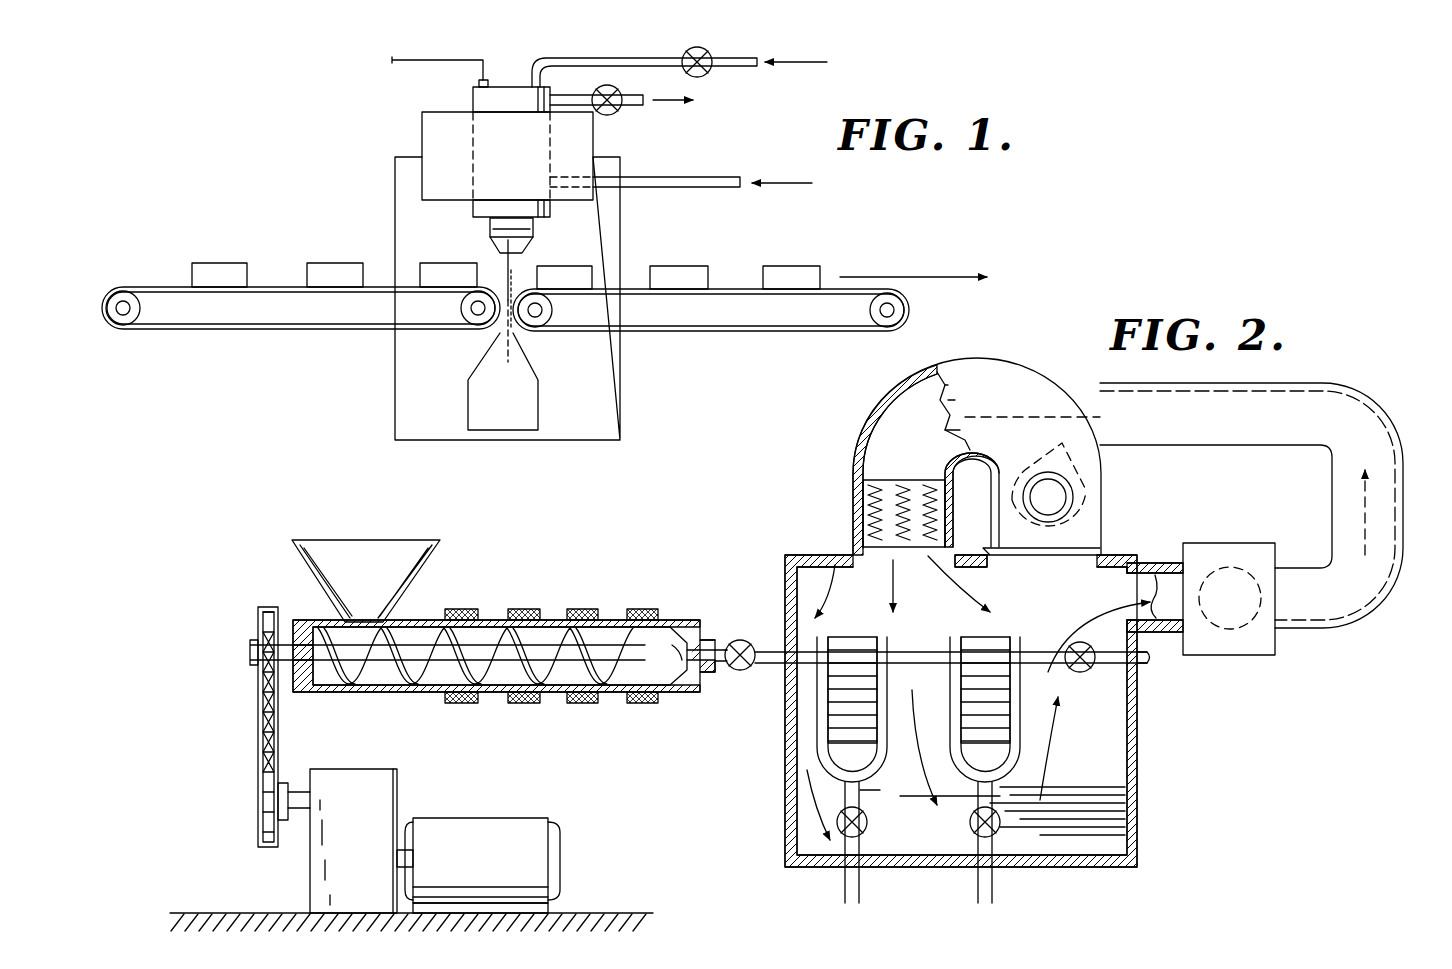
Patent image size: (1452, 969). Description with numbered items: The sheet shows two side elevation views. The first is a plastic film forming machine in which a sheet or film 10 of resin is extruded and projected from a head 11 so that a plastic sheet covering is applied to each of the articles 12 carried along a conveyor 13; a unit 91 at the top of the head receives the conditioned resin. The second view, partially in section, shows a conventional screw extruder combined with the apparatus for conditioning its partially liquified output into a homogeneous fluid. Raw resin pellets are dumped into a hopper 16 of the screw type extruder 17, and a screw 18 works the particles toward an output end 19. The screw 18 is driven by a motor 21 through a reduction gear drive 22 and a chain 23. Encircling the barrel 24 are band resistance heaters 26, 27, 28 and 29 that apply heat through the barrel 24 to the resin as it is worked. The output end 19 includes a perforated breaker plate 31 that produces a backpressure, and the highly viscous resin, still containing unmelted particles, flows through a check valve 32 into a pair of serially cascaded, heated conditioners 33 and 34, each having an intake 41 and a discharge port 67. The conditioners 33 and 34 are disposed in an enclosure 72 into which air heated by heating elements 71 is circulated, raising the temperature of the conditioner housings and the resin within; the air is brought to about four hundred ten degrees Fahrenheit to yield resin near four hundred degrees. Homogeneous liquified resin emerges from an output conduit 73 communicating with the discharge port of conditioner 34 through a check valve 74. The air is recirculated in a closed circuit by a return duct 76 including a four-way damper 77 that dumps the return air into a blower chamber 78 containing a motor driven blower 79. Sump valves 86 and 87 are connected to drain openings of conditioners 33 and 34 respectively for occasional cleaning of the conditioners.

In FIG. 1, the sheet or film 10 is at (492, 262).
In FIG. 1, the head 11 is at (538, 224).
In FIG. 1, the articles 12 is at (318, 278).
In FIG. 1, the conveyor 13 is at (244, 341).
In FIG. 2, the hopper 16 is at (306, 566).
In FIG. 2, the screw type extruder 17 is at (488, 647).
In FIG. 2, the screw 18 is at (478, 640).
In FIG. 2, the output end 19 is at (708, 668).
In FIG. 2, the motor 21 is at (519, 860).
In FIG. 2, the reduction gear drive 22 is at (360, 848).
In FIG. 2, the chain 23 is at (258, 742).
In FIG. 2, the barrel 24 is at (617, 620).
In FIG. 2, the band resistance heater 26 is at (460, 705).
In FIG. 2, the band resistance heater 27 is at (523, 704).
In FIG. 2, the band resistance heater 28 is at (580, 705).
In FIG. 2, the band resistance heater 29 is at (642, 705).
In FIG. 2, the perforated breaker plate 31 is at (682, 642).
In FIG. 2, the check valve 32 is at (740, 640).
In FIG. 2, the heated conditioner 33 is at (825, 746).
In FIG. 2, the heated conditioner 34 is at (1005, 638).
In FIG. 2, the intake 41 is at (815, 660).
In FIG. 2, the discharge port 67 is at (888, 640).
In FIG. 2, the heating elements 71 is at (873, 510).
In FIG. 2, the enclosure 72 is at (1140, 752).
In FIG. 1, the output conduit 73 is at (676, 190).
In FIG. 2, the output conduit 73 is at (1148, 665).
In FIG. 2, the check valve 74 is at (1084, 672).
In FIG. 2, the return duct 76 is at (1312, 388).
In FIG. 2, the four-way damper 77 is at (1253, 650).
In FIG. 2, the blower chamber 78 is at (985, 358).
In FIG. 2, the motor driven blower 79 is at (1090, 498).
In FIG. 2, the sump valve 86 is at (869, 822).
In FIG. 2, the sump valve 87 is at (1001, 822).
In FIG. 1, the extruder head 91 is at (470, 97).